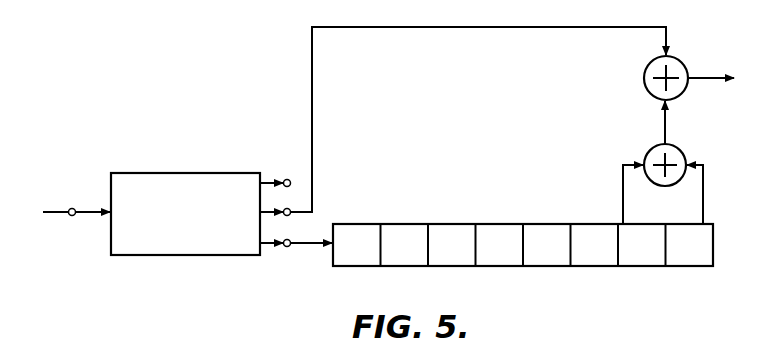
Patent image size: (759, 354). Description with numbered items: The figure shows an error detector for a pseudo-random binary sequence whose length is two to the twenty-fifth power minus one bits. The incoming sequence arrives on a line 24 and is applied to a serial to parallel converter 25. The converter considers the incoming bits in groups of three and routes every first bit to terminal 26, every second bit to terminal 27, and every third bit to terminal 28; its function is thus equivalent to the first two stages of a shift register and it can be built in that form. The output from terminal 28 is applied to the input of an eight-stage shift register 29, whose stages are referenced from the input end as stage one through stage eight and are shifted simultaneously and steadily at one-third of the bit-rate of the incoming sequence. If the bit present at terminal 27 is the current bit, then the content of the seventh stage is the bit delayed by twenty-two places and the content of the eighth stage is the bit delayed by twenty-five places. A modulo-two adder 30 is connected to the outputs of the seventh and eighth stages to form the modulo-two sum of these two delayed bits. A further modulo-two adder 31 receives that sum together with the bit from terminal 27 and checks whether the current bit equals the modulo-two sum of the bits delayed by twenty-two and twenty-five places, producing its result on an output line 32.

The line 24 is at (53, 213).
The serial to parallel converter 25 is at (215, 173).
The terminal 26 is at (291, 183).
The terminal 27 is at (291, 212).
The terminal 28 is at (288, 247).
The eight-stage shift register 29 is at (577, 223).
The modulo-2 adder 30 is at (650, 150).
The further modulo-2 adder 31 is at (681, 62).
The line 32 is at (700, 80).